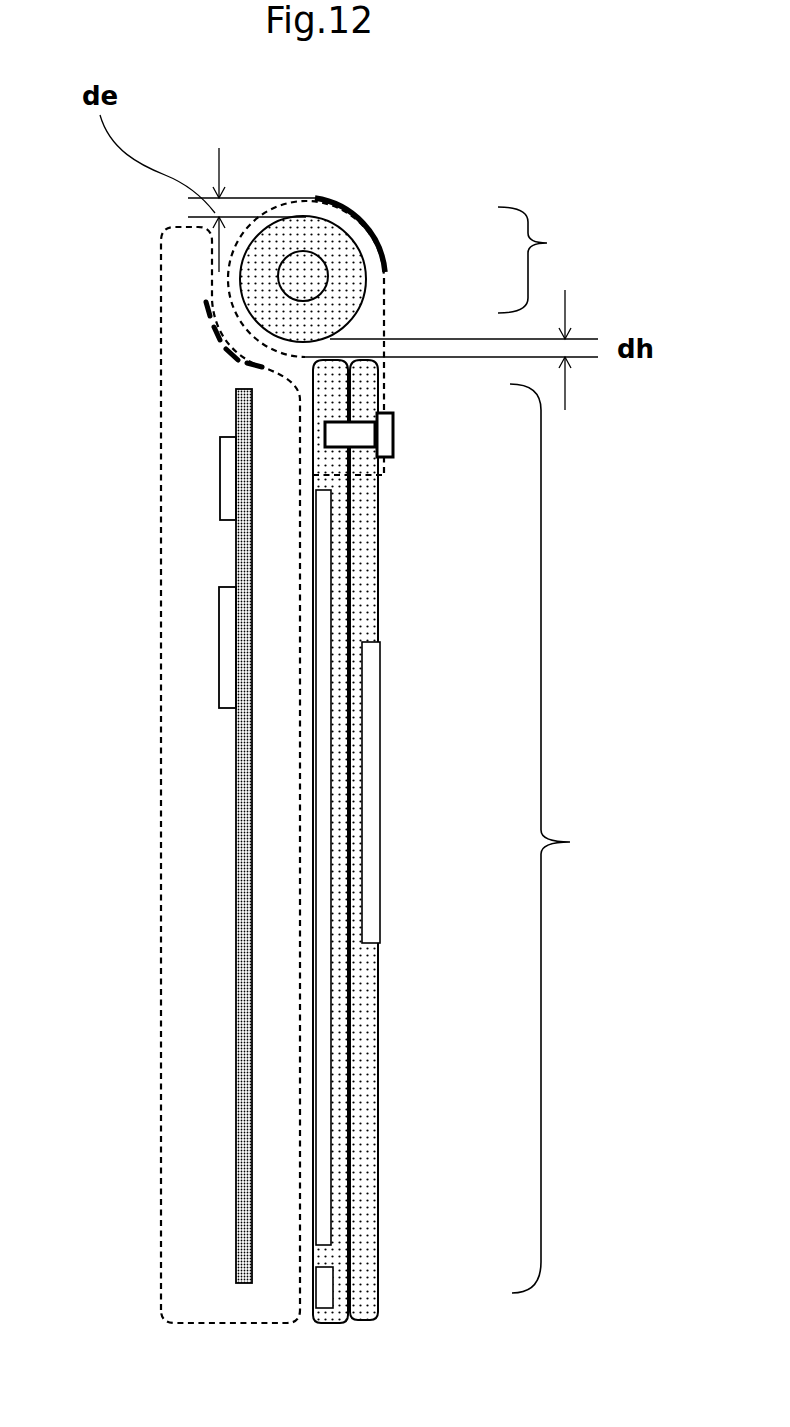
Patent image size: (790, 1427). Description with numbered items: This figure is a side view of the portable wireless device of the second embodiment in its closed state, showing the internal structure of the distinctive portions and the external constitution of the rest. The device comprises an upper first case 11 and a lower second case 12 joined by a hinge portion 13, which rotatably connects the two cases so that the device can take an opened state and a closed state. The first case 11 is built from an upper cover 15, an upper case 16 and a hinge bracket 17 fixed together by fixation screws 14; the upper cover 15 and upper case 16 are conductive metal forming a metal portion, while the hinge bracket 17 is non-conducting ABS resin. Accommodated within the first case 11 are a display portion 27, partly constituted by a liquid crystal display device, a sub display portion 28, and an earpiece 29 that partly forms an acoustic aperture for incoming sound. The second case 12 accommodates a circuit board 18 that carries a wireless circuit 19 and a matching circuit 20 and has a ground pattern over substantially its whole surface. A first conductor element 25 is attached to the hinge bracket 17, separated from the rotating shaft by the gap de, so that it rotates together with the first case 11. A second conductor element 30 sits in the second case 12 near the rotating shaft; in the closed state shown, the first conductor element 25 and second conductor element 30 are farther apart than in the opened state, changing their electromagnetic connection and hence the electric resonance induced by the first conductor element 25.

The first case 11 is at (566, 838).
The second case 12 is at (180, 257).
The hinge portion 13 is at (543, 260).
The fixation screws 14 is at (383, 428).
The upper cover 15 is at (342, 980).
The upper case 16 is at (360, 512).
The hinge bracket 17 is at (387, 323).
The circuit board 18 is at (237, 1067).
The wireless circuit 19 is at (227, 634).
The matching circuit 20 is at (227, 460).
The first conductor element 25 is at (350, 194).
The display portion 27 is at (326, 1087).
The sub display portion 28 is at (367, 712).
The earpiece 29 is at (323, 1282).
The second conductor element 30 is at (210, 318).